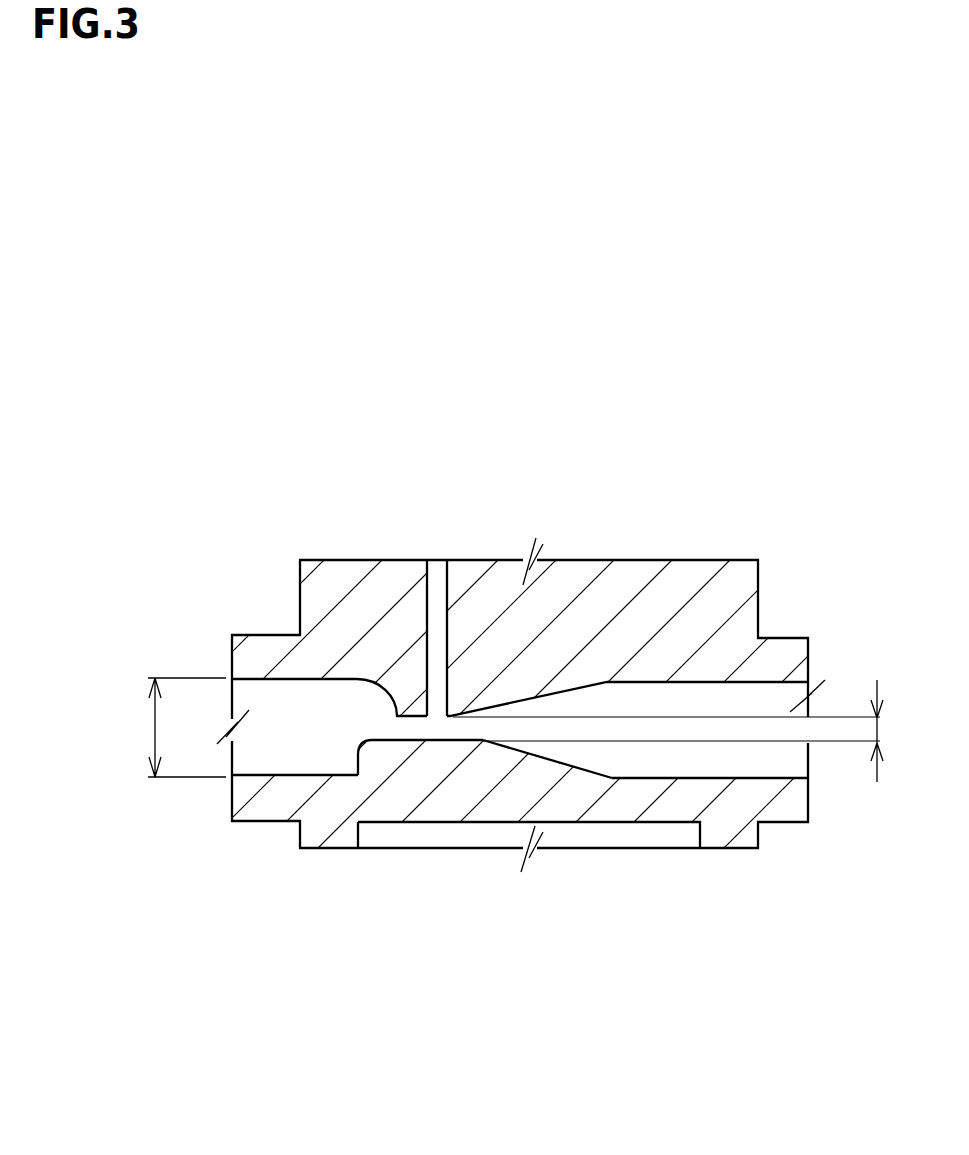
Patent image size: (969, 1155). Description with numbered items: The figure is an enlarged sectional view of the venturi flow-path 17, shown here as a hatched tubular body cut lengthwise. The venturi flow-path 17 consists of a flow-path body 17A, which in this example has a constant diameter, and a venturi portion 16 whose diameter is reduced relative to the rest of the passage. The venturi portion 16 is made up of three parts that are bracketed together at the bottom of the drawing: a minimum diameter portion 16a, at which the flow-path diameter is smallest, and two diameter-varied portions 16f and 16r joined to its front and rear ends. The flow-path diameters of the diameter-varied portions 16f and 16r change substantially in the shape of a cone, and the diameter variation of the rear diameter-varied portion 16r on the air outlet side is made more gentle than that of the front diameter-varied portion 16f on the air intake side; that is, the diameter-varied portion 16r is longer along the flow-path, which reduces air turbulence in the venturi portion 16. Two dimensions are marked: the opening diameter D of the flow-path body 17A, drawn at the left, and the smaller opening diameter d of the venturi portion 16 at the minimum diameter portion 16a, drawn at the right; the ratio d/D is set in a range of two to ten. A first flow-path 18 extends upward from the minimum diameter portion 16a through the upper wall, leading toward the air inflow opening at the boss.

The venturi portion 16 is at (483, 927).
The diameter-varied portion 16f is at (355, 750).
The minimum diameter portion 16a is at (423, 742).
The diameter-varied portion 16r is at (553, 764).
The venturi flow-path 17 is at (554, 784).
The flow-path body 17A is at (565, 641).
The first flow-path 18 is at (437, 588).
The opening diameter D is at (176, 727).
The opening diameter d is at (676, 731).